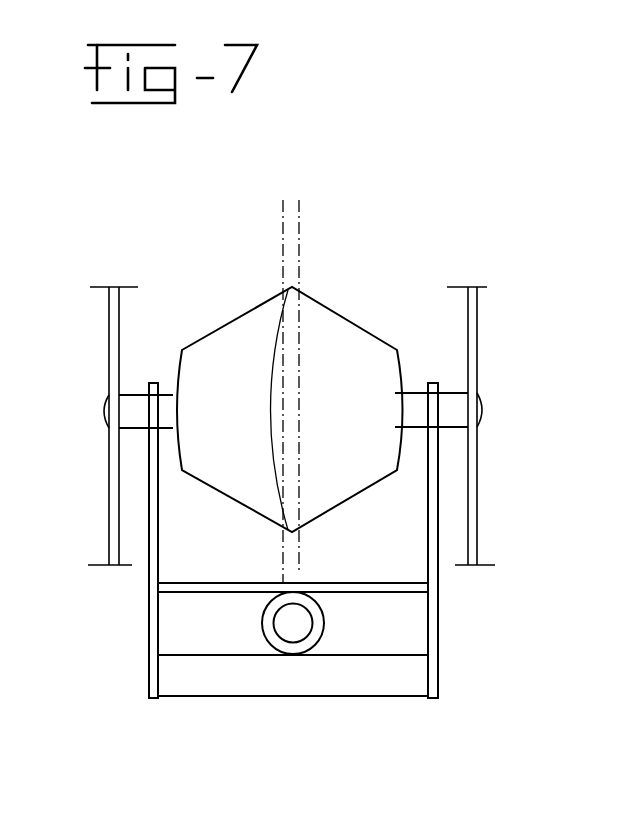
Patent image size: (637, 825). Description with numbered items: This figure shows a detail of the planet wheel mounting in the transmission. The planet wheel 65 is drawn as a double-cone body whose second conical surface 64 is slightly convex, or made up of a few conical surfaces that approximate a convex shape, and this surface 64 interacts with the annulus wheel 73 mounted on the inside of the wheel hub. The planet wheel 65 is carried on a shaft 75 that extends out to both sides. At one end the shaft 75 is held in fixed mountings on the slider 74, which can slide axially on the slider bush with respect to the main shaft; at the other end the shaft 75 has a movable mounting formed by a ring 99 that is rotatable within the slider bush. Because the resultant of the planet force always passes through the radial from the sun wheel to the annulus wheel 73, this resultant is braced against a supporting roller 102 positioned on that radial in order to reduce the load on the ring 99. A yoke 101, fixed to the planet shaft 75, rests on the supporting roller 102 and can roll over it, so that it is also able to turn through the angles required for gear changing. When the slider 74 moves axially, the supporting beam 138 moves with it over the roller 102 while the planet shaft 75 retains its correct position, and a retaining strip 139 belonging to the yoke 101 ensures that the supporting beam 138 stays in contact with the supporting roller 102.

The annulus wheel 73 is at (295, 222).
The planet wheel 65 is at (233, 306).
The second conical surface 64 is at (333, 330).
The ring 99 is at (109, 318).
The slider 74 is at (476, 332).
The shaft 75 is at (408, 408).
The yoke 101 is at (433, 572).
The retaining strip 139 is at (182, 588).
The supporting beam 138 is at (247, 675).
The supporting roller 102 is at (302, 628).